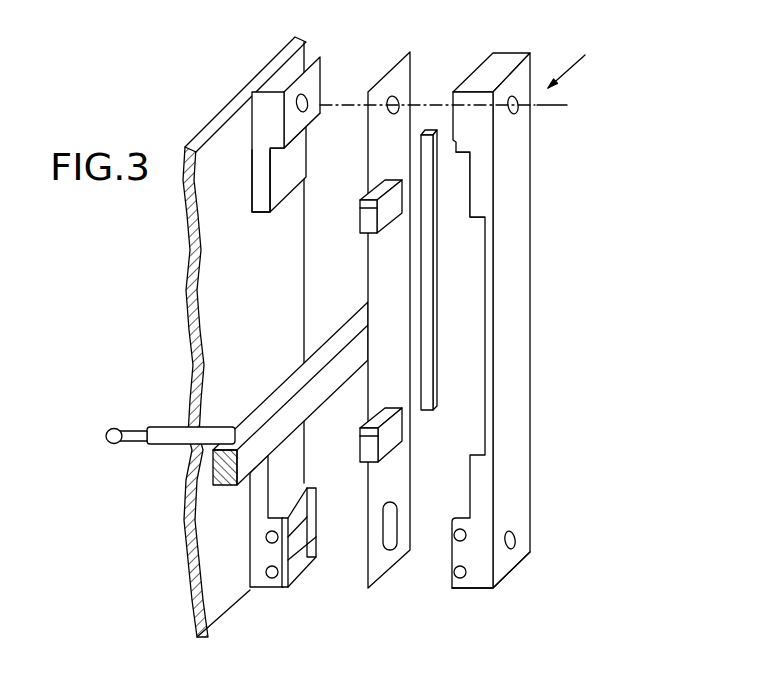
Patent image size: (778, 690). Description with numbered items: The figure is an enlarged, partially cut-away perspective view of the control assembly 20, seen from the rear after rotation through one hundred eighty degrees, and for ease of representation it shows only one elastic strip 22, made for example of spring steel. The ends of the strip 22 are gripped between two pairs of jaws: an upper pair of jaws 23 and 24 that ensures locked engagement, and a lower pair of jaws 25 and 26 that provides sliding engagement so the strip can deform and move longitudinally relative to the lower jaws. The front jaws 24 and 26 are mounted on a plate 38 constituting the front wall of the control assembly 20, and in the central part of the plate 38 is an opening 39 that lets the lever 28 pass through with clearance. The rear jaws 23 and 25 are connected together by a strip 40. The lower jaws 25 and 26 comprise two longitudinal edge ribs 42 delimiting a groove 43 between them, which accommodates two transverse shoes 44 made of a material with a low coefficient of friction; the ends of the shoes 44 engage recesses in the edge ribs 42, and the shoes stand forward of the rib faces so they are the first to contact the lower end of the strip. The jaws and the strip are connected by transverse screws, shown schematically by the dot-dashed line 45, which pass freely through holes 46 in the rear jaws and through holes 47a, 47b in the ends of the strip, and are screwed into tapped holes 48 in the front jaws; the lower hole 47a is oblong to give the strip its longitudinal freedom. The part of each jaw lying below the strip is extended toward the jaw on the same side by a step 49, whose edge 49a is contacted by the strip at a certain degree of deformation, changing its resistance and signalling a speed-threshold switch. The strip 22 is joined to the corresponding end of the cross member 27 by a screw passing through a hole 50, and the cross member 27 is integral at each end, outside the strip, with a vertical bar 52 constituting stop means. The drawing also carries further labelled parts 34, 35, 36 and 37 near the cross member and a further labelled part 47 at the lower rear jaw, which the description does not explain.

The control assembly 20 is at (585, 55).
The elastic strip 22 is at (415, 313).
The upper rear jaw 23 is at (513, 328).
The upper front jaw 24 is at (304, 141).
The lower rear jaw 25 is at (480, 568).
The lower front jaw 26 is at (262, 573).
The cross member 27 is at (267, 312).
The lever 28 is at (172, 425).
The upper block 34 is at (362, 227).
The upper stop 35 is at (358, 210).
The lower block 36 is at (390, 429).
The lower stop 37 is at (360, 435).
The plate 38 is at (224, 337).
The opening 39 is at (207, 452).
The strip 40 is at (517, 312).
The longitudinal edge ribs 42 is at (317, 518).
The groove 43 is at (290, 493).
The transverse shoes 44 is at (300, 560).
The dot-dashed line 45 is at (563, 100).
The holes 46 is at (517, 113).
The pin 47 is at (460, 582).
The lower hole 47a is at (390, 525).
The upper hole 47b is at (413, 87).
The tapped holes 48 is at (312, 100).
The step 49 is at (293, 160).
The edge of step 49a is at (285, 218).
The hole 50 is at (365, 300).
The vertical bar 52 is at (436, 335).